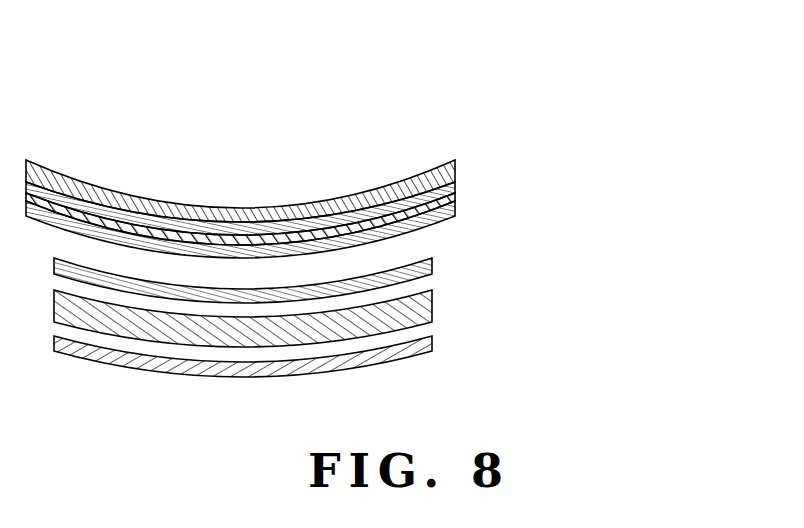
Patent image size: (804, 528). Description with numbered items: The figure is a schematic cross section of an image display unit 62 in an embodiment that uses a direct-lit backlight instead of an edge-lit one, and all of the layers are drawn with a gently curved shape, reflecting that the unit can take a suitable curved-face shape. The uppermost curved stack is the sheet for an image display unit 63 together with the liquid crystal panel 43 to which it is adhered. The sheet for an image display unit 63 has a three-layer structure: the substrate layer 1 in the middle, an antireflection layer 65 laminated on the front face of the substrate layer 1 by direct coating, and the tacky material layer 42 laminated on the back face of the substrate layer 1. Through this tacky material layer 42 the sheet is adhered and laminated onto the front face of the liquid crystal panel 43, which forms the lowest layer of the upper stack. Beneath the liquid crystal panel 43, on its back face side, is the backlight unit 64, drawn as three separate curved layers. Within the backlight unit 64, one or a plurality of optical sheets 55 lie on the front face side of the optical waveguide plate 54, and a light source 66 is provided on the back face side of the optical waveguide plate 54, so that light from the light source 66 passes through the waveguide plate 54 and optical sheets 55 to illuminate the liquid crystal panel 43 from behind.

The substrate layer 1 is at (457, 184).
The tacky material layer 42 is at (282, 203).
The liquid crystal panel 43 is at (457, 212).
The optical waveguide plate 54 is at (392, 327).
The optical sheet 55 is at (434, 272).
The image display unit 62 is at (336, 129).
The sheet for an image display unit 63 is at (308, 172).
The backlight unit 64 is at (352, 339).
The antireflection layer 65 is at (457, 163).
The light source 66 is at (383, 363).